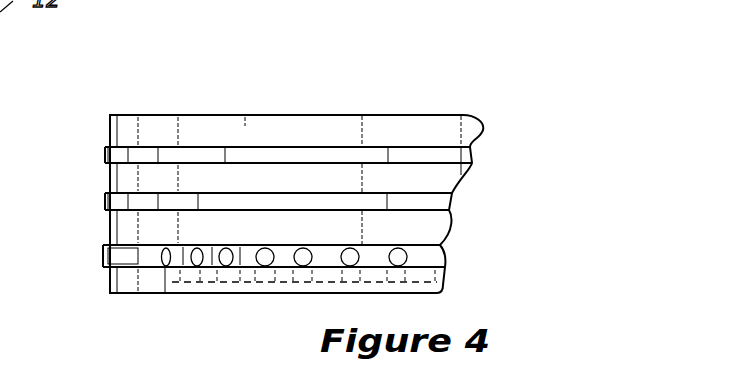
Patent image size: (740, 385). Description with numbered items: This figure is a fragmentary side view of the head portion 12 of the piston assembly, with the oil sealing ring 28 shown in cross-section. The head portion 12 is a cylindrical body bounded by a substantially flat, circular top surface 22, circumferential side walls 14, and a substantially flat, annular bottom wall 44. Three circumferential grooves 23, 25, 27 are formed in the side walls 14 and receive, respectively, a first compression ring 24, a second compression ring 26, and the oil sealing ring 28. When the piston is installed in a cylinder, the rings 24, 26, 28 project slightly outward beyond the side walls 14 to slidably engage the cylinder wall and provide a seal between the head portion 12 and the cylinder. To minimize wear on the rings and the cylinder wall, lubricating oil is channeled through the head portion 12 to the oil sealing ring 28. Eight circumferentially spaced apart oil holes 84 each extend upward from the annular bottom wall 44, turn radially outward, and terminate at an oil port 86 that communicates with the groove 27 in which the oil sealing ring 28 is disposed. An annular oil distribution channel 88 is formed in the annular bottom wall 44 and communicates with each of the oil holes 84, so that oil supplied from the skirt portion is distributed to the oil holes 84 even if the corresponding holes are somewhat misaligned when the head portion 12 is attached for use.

The head portion 12 is at (327, 113).
The circumferential side walls 14 is at (110, 176).
The top surface 22 is at (200, 115).
The circumferential groove 23 is at (110, 172).
The first compression ring 24 is at (105, 152).
The circumferential groove 25 is at (110, 218).
The second compression ring 26 is at (104, 199).
The circumferential groove 27 is at (110, 277).
The oil sealing ring 28 is at (104, 257).
The annular bottom wall 44 is at (152, 293).
The oil holes 84 is at (180, 296).
The oil port 86 is at (160, 265).
The annular oil distribution channel 88 is at (276, 292).